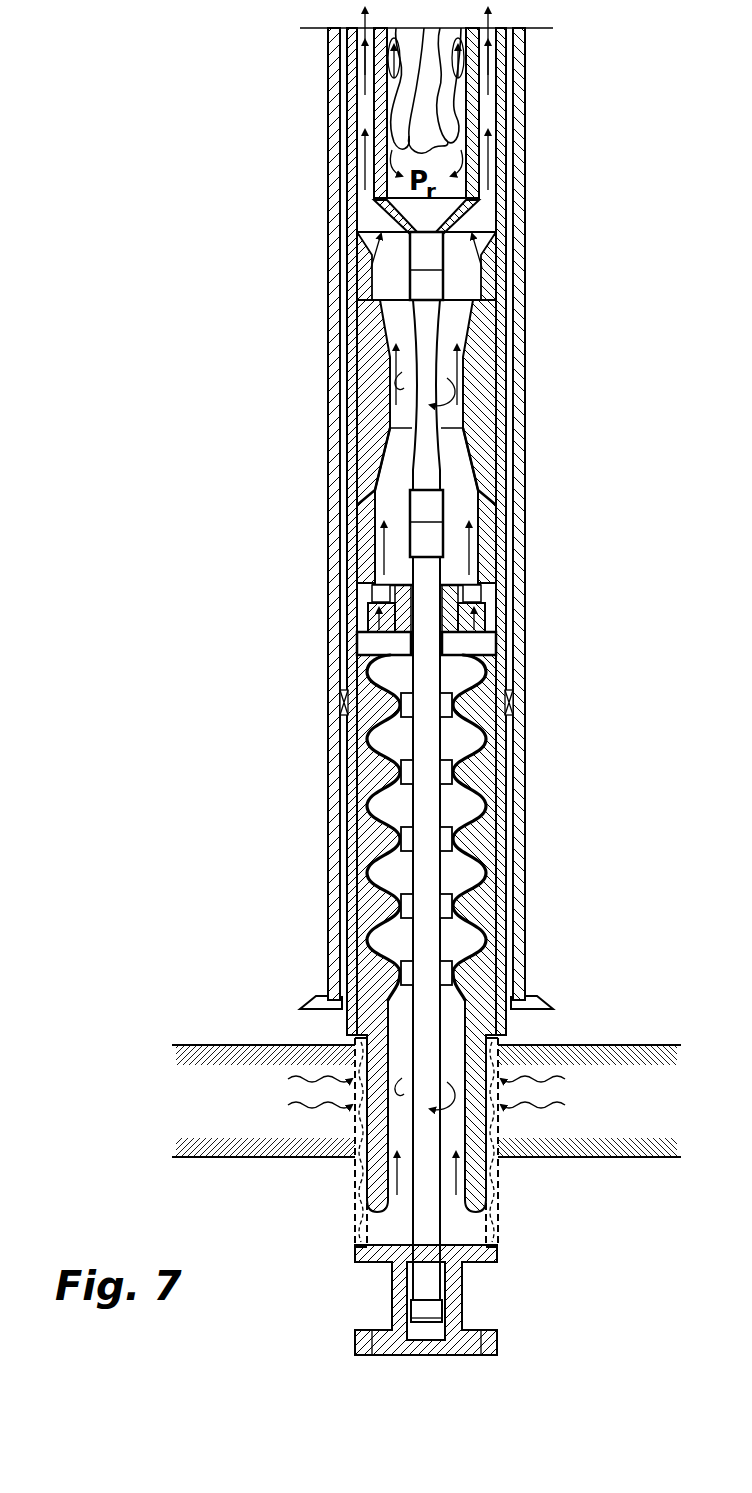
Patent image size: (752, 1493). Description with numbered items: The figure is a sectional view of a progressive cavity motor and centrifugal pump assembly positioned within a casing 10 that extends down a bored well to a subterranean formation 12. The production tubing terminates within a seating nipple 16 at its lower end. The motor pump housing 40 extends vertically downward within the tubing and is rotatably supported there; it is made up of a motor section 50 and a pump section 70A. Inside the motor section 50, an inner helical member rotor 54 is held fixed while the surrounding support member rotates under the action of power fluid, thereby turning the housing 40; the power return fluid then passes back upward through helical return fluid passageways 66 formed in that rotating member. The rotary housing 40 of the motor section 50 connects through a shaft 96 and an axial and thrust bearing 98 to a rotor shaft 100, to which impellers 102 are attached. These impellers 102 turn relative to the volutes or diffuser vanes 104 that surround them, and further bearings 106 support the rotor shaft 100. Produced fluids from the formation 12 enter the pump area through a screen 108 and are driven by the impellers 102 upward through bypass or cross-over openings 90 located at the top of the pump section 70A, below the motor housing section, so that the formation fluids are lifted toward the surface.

The casing 10 is at (520, 256).
The subterranean formation 12 is at (222, 1111).
The seating nipple 16 is at (513, 702).
The motor pump housing 40 is at (473, 190).
The motor section 50 is at (486, 157).
The inner helical member rotor 54 is at (418, 72).
The helical return fluid passageways 66 is at (465, 83).
The pump section 70A is at (486, 773).
The bypass or cross-over openings 90 is at (380, 618).
The shaft 96 is at (433, 368).
The axial and thrust bearing 98 is at (483, 600).
The rotor shaft 100 is at (428, 660).
The impellers 102 is at (482, 722).
The diffuser vanes 104 is at (380, 737).
The bearings 106 is at (447, 1300).
The screen 108 is at (498, 1168).